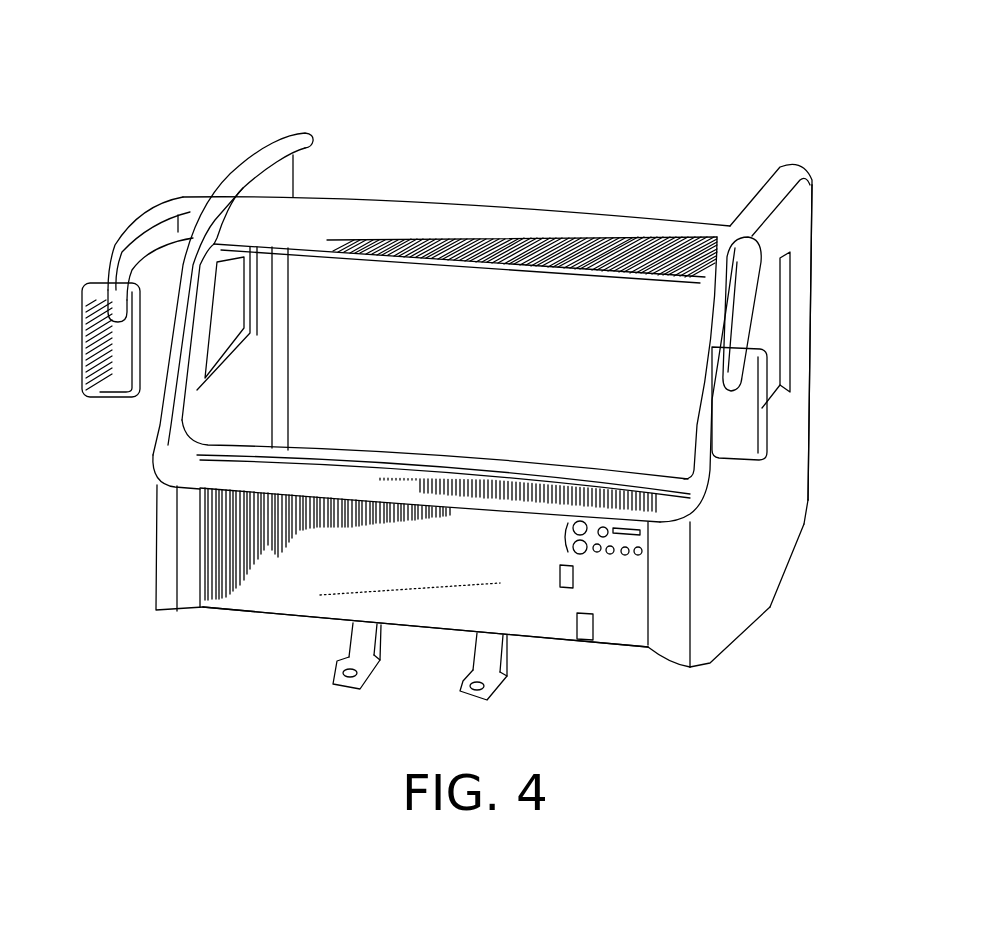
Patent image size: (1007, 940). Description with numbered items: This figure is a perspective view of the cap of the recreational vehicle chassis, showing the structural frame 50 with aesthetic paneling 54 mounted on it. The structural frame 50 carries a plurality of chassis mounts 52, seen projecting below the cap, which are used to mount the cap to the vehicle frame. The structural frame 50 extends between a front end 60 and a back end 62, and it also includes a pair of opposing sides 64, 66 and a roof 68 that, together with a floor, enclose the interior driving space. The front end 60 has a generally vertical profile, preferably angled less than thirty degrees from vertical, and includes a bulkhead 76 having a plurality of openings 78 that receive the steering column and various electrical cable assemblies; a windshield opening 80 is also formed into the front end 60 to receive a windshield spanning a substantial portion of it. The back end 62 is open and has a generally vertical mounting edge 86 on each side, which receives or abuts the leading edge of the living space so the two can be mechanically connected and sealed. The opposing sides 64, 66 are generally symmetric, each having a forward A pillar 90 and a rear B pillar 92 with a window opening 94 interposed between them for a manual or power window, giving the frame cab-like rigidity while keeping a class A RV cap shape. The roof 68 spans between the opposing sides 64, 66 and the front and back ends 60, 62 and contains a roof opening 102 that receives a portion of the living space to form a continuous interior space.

The roof opening 102 is at (612, 140).
The structural frame 50 is at (793, 178).
The chassis mounts 52 is at (340, 663).
The aesthetic paneling 54 is at (753, 550).
The front end 60 is at (663, 642).
The back end 62 is at (808, 394).
The opposing side 64 is at (727, 602).
The opposing side 66 is at (157, 523).
The roof 68 is at (717, 251).
The bulkhead 76 is at (235, 594).
The openings 78 is at (565, 538).
The windshield opening 80 is at (310, 422).
The mounting edge 86 is at (808, 506).
The A pillar 90 is at (212, 218).
The B pillar 92 is at (293, 181).
The window opening 94 is at (252, 321).